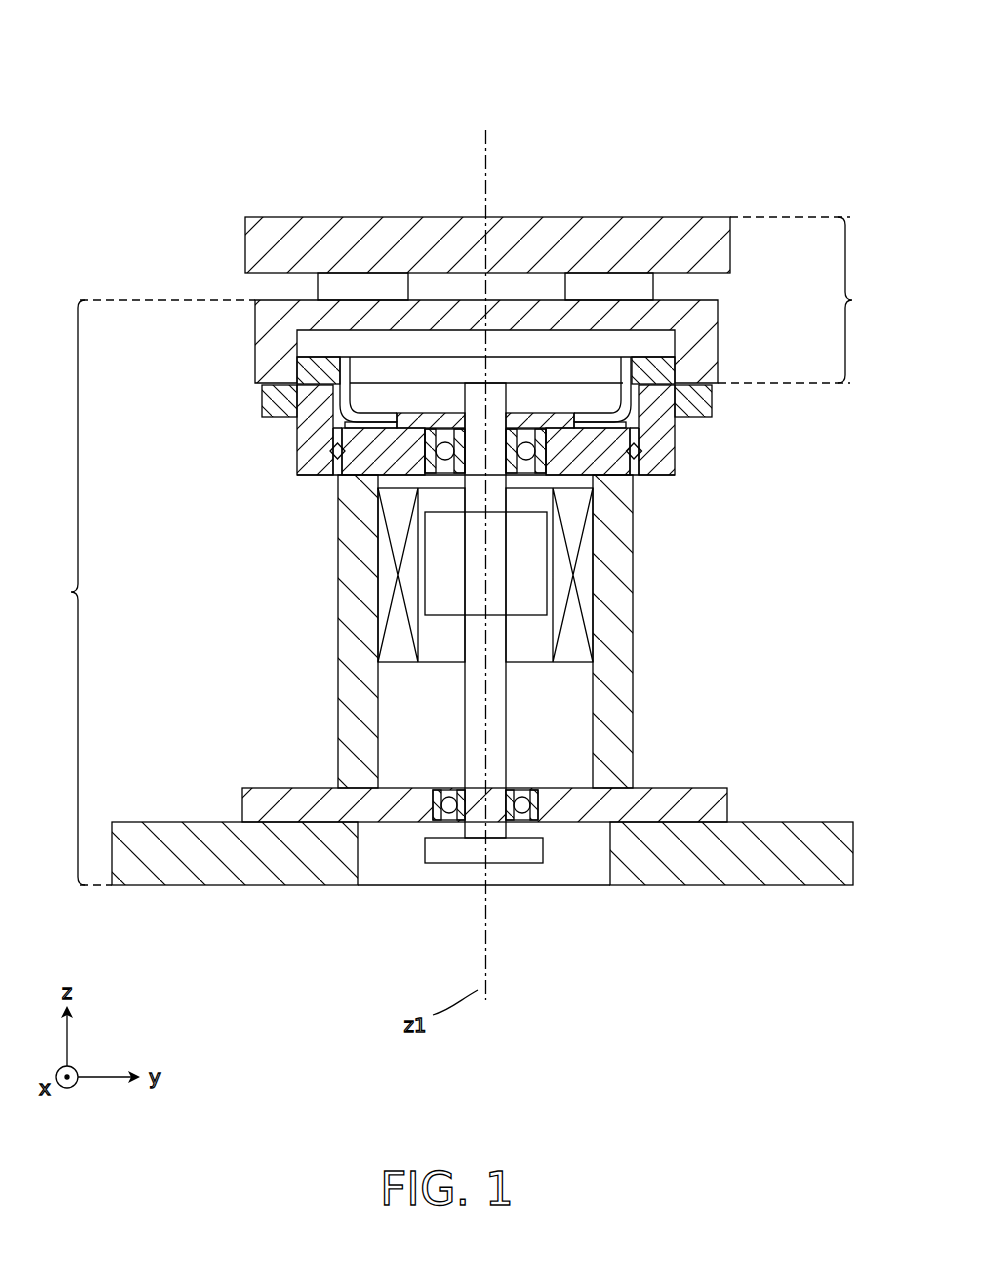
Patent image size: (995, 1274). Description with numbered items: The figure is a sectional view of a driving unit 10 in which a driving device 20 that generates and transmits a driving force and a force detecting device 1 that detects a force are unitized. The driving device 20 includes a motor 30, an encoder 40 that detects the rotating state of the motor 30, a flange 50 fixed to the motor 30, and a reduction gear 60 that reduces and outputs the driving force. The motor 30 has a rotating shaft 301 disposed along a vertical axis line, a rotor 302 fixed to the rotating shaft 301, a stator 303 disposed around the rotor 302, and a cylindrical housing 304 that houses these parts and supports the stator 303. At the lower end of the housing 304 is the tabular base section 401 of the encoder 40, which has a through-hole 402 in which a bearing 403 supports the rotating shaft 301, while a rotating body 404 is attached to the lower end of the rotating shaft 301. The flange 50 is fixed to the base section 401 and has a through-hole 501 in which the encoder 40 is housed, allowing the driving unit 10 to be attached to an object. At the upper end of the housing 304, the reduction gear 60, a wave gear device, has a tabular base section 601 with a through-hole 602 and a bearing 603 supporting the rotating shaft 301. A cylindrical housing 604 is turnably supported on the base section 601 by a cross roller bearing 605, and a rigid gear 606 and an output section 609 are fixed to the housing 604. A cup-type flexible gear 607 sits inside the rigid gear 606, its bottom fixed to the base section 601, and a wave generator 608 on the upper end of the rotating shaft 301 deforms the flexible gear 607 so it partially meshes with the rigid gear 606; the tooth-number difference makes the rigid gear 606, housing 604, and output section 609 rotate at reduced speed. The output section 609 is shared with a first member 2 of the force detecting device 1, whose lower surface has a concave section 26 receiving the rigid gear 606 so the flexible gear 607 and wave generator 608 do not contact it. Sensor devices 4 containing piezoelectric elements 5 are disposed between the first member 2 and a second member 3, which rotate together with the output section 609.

The driving unit 10 is at (731, 88).
The force detecting device 1 is at (854, 300).
The driving device 20 is at (58, 592).
The second member 3 is at (676, 230).
The sensor devices 4 is at (485, 223).
The piezoelectric elements 5 is at (352, 290).
The first member 2 is at (544, 341).
The output section 609 is at (718, 330).
The concave section 26 is at (445, 345).
The wave generator 608 is at (373, 365).
The rigid gear 606 is at (307, 368).
The flexible gear 607 is at (640, 400).
The reduction gear 60 is at (486, 444).
The housing 604 is at (300, 433).
The cross roller bearing 605 is at (330, 455).
The bearing 603 is at (537, 465).
The base section 601 is at (378, 473).
The through-hole 602 is at (430, 480).
The motor 30 is at (549, 610).
The housing 304 is at (636, 680).
The stator 303 is at (578, 627).
The rotor 302 is at (533, 553).
The rotating shaft 301 is at (507, 720).
The base section 401 is at (718, 790).
The bearing 403 is at (446, 790).
The through-hole 402 is at (522, 790).
The flange 50 is at (482, 892).
The through-hole 501 is at (598, 868).
The encoder 40 is at (489, 903).
The rotating body 404 is at (438, 845).